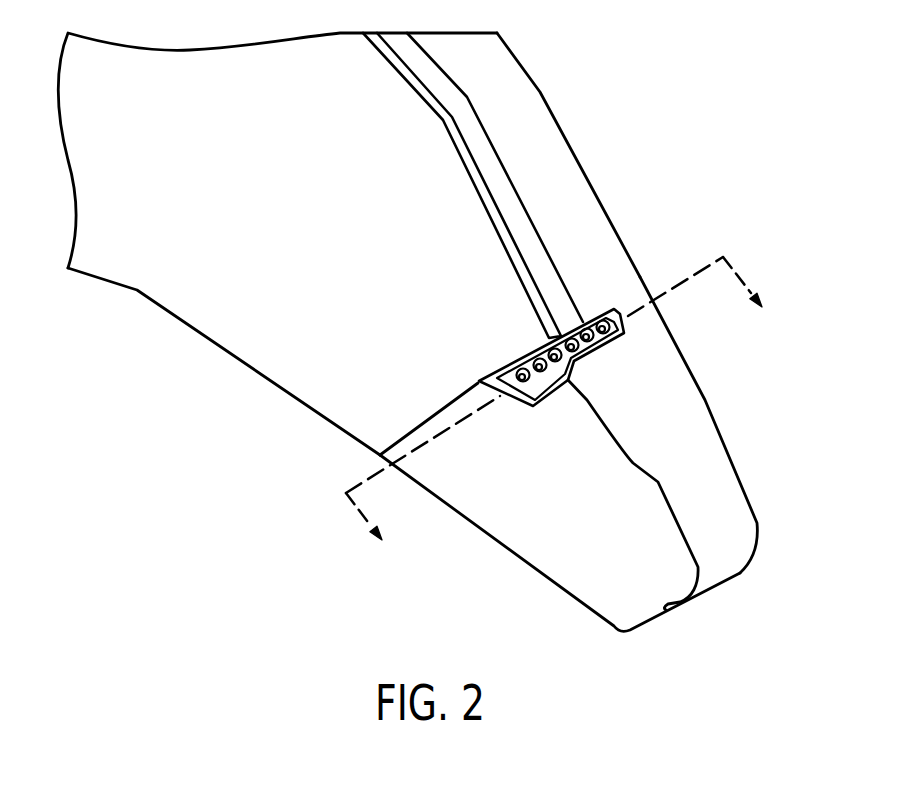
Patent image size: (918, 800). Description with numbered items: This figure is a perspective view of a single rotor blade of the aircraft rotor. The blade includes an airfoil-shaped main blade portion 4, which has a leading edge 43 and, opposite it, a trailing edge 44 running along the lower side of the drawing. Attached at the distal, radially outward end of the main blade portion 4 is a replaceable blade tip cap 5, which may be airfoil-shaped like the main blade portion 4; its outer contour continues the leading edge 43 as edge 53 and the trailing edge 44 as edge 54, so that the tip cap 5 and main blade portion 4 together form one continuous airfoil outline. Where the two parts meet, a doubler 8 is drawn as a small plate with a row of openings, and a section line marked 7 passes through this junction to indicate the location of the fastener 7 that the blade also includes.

The main blade portion 4 is at (557, 145).
The leading edge 43 is at (543, 92).
The trailing edge 44 is at (336, 428).
The replaceable blade tip cap 5 is at (603, 560).
The side wall 53 is at (698, 380).
The edge of lower body 54 is at (477, 530).
The doubler 8 is at (611, 307).
The fastener 7 is at (559, 418).